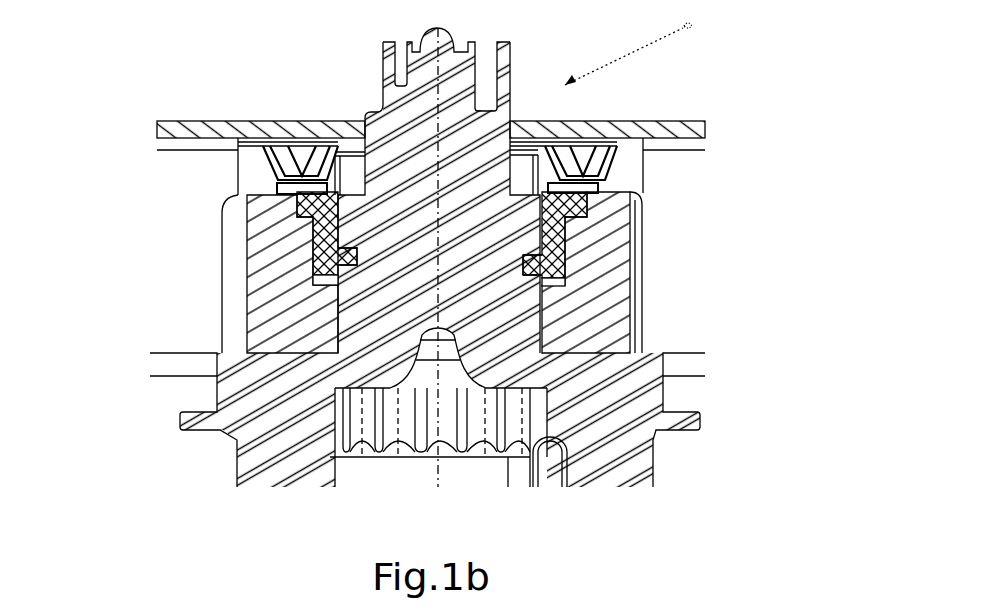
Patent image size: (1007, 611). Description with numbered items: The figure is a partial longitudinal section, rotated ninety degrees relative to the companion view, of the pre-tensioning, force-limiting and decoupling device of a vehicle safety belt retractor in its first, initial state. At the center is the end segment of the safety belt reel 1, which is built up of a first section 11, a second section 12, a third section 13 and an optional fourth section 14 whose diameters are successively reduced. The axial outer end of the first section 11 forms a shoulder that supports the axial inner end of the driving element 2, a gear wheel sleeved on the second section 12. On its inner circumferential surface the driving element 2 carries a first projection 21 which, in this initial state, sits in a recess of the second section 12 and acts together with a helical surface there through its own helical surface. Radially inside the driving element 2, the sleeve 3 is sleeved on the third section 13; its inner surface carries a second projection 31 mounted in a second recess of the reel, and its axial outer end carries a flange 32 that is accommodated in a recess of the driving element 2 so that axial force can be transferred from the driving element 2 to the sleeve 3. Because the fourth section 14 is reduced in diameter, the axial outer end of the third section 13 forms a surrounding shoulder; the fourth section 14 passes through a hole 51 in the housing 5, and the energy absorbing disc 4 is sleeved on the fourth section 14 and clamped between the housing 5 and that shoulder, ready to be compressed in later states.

The safety belt reel 1 is at (250, 435).
The driving element 2 is at (273, 285).
The sleeve 3 is at (330, 230).
The energy absorbing disc 4 is at (238, 160).
The housing 5 is at (340, 136).
The hole 51 is at (325, 122).
The first section 11 is at (636, 442).
The second section 12 is at (527, 327).
The third section 13 is at (642, 233).
The fourth section 14 is at (510, 121).
The first projection 21 is at (548, 307).
The second projection 31 is at (542, 270).
The flange 32 is at (630, 193).